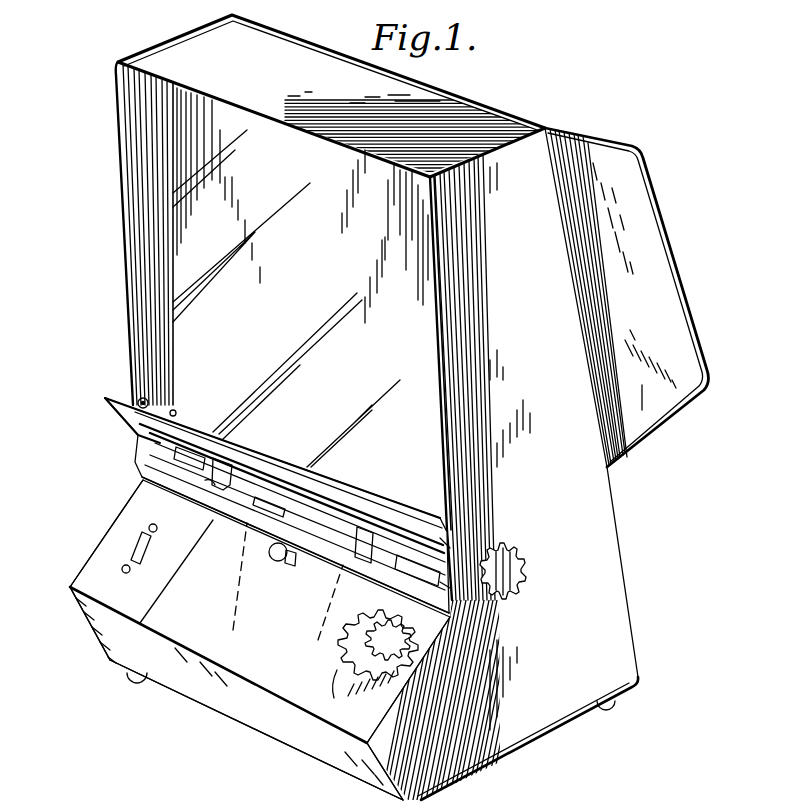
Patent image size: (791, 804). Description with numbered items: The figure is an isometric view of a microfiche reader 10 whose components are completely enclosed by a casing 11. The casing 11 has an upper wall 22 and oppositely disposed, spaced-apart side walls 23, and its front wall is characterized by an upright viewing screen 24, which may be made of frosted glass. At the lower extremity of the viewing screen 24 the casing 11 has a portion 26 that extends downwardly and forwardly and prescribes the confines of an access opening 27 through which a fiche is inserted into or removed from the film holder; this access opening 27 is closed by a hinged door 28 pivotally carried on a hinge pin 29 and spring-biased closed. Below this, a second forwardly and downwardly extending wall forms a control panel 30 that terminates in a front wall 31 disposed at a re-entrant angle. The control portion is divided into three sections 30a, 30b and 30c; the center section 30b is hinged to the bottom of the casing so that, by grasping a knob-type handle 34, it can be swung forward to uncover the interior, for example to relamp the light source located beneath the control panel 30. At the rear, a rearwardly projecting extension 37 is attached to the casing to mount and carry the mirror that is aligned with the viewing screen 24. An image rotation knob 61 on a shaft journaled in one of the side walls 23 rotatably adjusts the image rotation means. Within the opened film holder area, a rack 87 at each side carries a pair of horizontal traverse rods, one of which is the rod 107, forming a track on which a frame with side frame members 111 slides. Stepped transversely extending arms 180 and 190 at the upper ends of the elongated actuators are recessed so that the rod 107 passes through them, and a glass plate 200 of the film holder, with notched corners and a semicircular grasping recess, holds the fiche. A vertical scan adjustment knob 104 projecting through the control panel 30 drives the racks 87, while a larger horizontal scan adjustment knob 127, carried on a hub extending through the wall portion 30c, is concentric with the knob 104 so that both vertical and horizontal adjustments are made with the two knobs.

The microfiche reader 10 is at (96, 105).
The casing 11 is at (160, 49).
The upper wall 22 is at (285, 47).
The side walls 23 is at (603, 534).
The viewing screen 24 is at (395, 250).
The downwardly and forwardly extending portion 26 is at (304, 499).
The access opening 27 is at (140, 482).
The hinged door 28 is at (173, 413).
The hinge pin 29 is at (486, 540).
The control panel 30 is at (233, 639).
The control panel section 30a is at (125, 578).
The center section 30b is at (245, 660).
The control panel wall portion 30c is at (333, 770).
The front wall 31 is at (257, 717).
The knob-type handle 34 is at (278, 568).
The rearwardly projecting extension 37 is at (650, 218).
The image rotation knob 61 is at (522, 554).
The rack 87 is at (208, 484).
The vertical scan adjustment knob 104 is at (347, 640).
The horizontal traverse rod 107 is at (180, 453).
The side frame members 111 is at (395, 536).
The horizontal scan adjustment knob 127 is at (337, 670).
The transversely extending arm 180 is at (222, 447).
The transversely extending arm 190 is at (348, 517).
The glass plate 200 is at (263, 500).